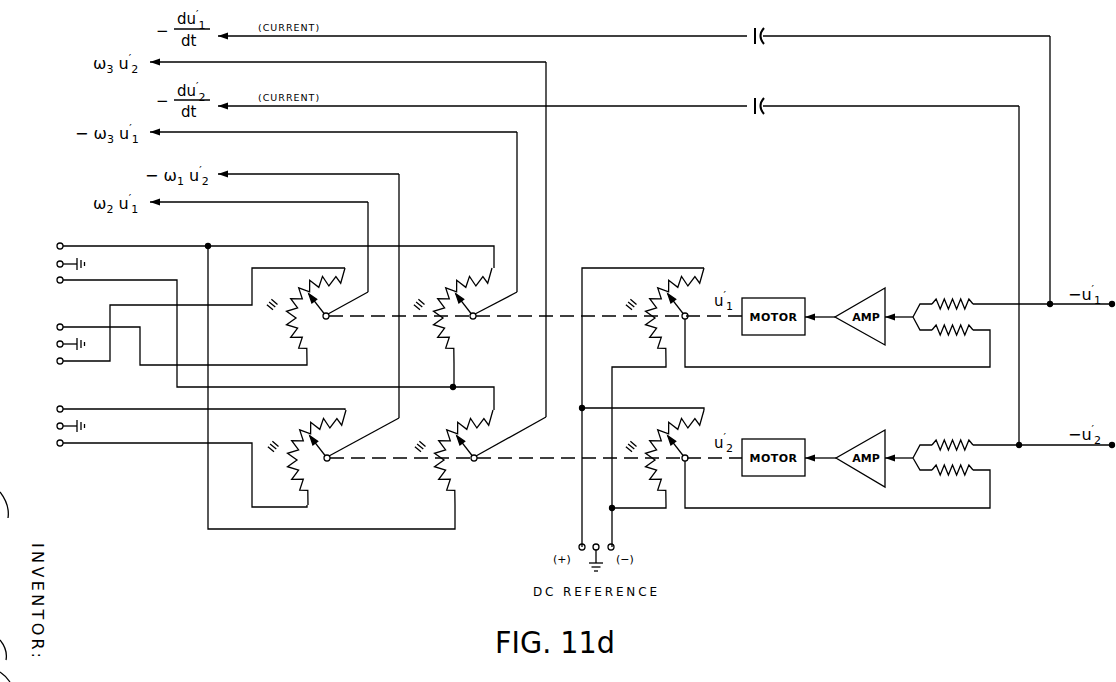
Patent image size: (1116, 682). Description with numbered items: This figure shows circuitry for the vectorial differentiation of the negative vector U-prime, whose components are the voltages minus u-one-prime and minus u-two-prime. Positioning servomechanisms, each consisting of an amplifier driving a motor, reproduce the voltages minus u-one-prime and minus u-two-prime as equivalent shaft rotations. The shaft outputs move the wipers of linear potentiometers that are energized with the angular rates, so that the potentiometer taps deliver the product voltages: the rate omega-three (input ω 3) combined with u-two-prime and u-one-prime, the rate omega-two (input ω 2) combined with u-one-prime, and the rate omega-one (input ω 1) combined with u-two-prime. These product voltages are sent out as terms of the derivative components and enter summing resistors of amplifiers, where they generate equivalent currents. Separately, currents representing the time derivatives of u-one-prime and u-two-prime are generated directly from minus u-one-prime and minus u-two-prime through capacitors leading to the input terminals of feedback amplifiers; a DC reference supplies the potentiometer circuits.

The angular rate input ω1 terminals 1 is at (174, 455).
The angular rate input ω2 terminals 2 is at (174, 318).
The angular rate input ω3 terminals 3 is at (249, 325).